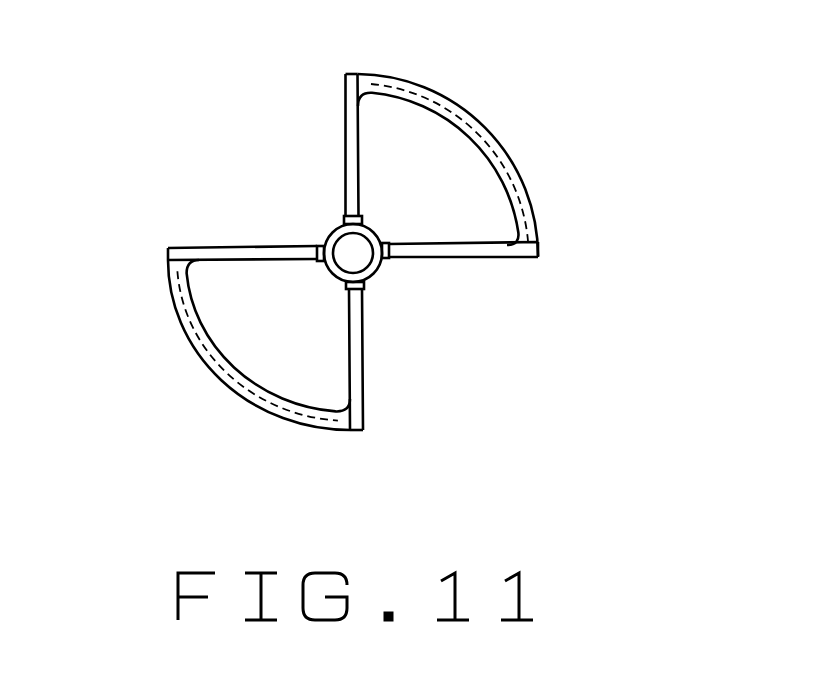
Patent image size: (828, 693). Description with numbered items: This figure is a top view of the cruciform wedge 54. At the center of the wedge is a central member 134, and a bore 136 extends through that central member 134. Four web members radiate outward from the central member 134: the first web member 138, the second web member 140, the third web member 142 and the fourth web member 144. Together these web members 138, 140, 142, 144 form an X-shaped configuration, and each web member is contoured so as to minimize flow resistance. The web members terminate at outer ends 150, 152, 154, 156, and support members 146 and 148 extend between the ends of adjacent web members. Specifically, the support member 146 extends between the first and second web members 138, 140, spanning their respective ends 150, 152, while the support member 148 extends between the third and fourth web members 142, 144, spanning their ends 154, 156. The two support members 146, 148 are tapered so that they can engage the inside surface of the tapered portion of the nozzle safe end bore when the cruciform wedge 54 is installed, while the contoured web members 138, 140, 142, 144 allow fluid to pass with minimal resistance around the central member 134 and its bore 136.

The cruciform wedge 54 is at (364, 247).
The central member 134 is at (378, 270).
The bore 136 is at (351, 250).
The first web member 138 is at (292, 108).
The second web member 140 is at (466, 242).
The third web member 142 is at (420, 391).
The fourth web member 144 is at (189, 233).
The support member 146 is at (462, 100).
The support member 148 is at (213, 372).
The end of web member 150 is at (344, 74).
The end of web member 152 is at (528, 245).
The end of web member 154 is at (354, 420).
The end of web member 156 is at (121, 265).